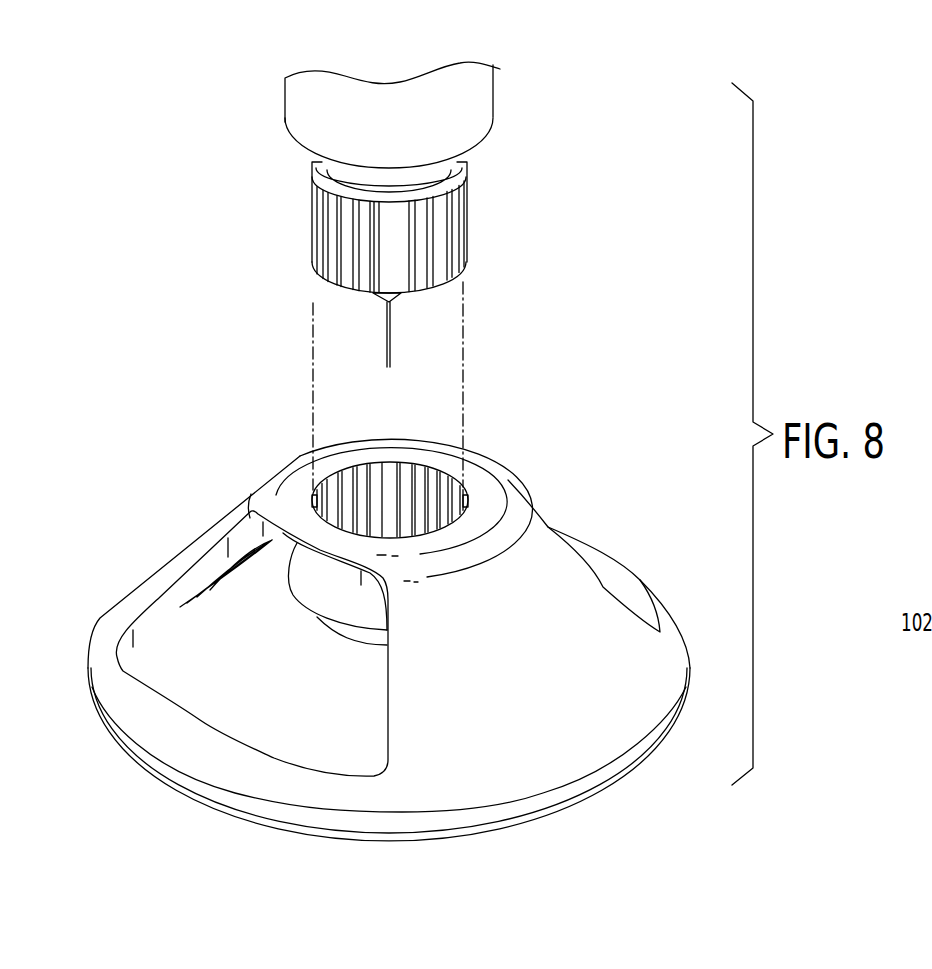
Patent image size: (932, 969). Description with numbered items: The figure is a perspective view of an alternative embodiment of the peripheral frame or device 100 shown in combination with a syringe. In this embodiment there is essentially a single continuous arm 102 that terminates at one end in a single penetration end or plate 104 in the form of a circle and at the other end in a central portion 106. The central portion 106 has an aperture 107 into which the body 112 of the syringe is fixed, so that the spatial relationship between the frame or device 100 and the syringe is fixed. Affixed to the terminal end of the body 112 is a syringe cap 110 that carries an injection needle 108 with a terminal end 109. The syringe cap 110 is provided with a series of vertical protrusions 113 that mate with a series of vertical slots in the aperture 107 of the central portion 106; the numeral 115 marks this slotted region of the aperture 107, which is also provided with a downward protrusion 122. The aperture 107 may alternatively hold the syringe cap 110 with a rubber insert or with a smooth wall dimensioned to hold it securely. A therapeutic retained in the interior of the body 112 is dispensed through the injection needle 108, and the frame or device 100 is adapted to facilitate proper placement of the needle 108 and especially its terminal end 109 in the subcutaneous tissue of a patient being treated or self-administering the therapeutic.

The peripheral frame or device 100 is at (203, 411).
The arm 102 is at (180, 607).
The penetration end or plate 104 is at (583, 807).
The central portion 106 is at (508, 480).
The aperture 107 is at (322, 518).
The injection needle 108 is at (392, 343).
The terminal end 109 is at (388, 368).
The syringe cap 110 is at (462, 237).
The body 112 is at (493, 89).
The vertical protrusions 113 is at (360, 243).
The socket ribs 115 is at (404, 470).
The downward protrusion 122 is at (366, 645).